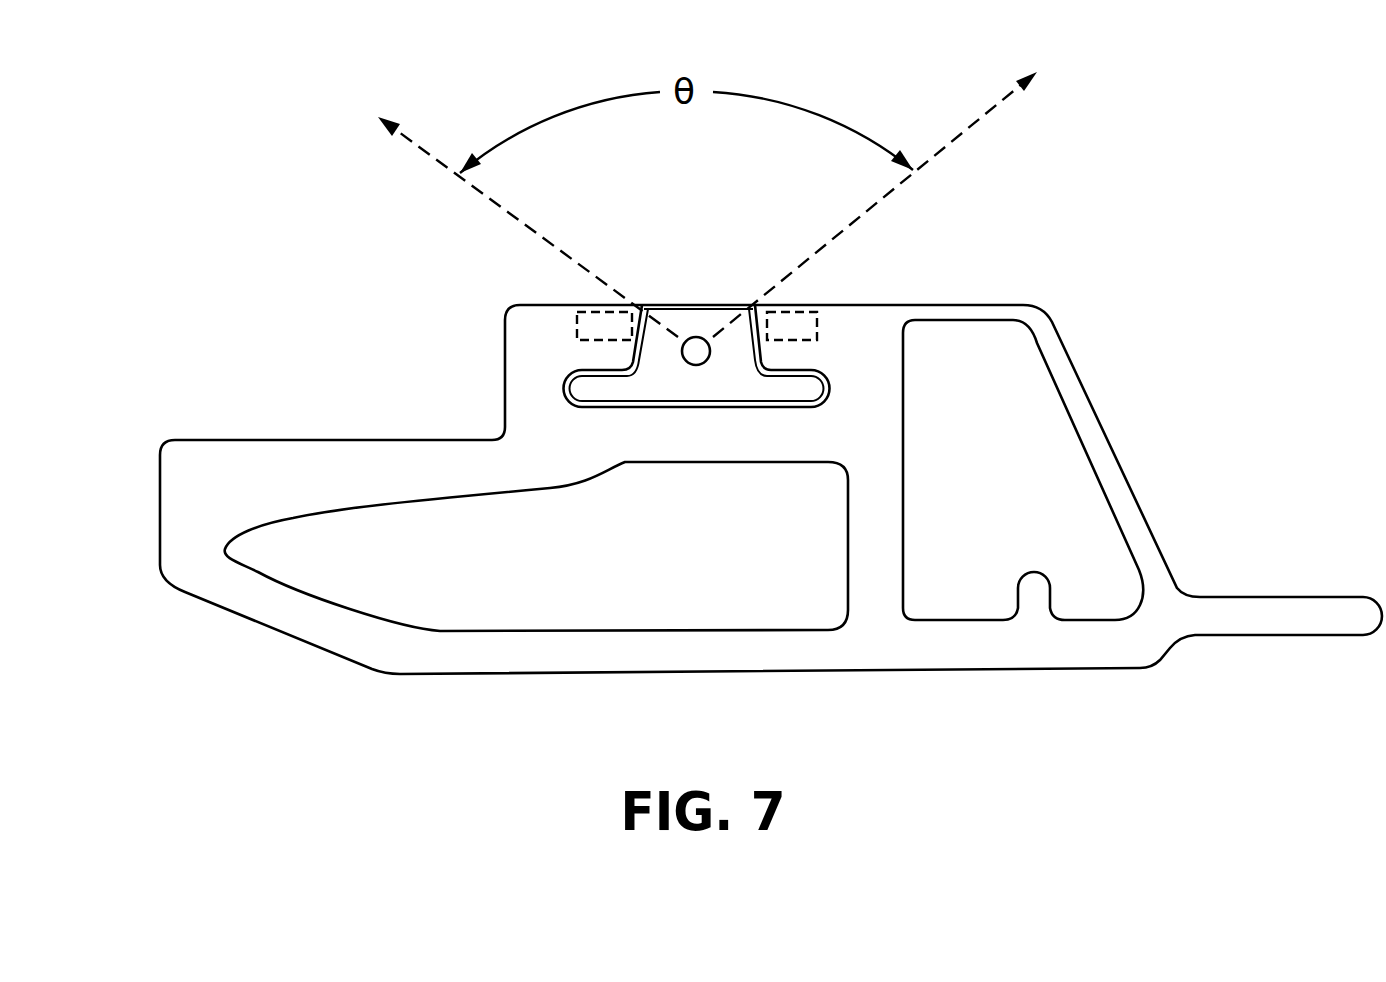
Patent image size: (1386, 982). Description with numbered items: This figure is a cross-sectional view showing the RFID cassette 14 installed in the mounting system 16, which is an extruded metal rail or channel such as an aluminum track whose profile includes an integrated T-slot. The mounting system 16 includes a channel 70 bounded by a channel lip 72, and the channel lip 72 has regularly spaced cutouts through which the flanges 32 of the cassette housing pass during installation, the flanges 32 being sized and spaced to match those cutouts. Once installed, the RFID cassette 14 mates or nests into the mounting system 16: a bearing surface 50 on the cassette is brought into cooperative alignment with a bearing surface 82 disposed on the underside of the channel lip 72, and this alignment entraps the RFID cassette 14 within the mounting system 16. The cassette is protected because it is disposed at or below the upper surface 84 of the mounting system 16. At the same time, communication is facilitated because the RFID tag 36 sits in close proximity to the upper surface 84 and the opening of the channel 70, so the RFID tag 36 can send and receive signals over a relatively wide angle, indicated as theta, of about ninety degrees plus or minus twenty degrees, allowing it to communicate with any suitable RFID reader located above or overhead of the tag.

The RFID cassette 14 is at (688, 222).
The mounting system 16 is at (482, 308).
The flanges 32 is at (795, 386).
The RFID tag 36 is at (699, 337).
The bearing surface 50 is at (600, 377).
The channel 70 is at (693, 411).
The channel lip 72 is at (785, 362).
The bearing surface 82 is at (600, 371).
The upper surface 84 is at (860, 305).